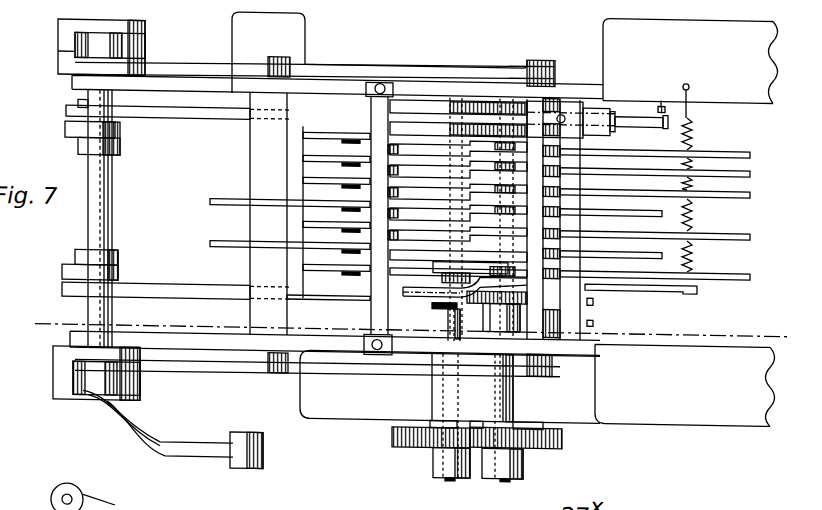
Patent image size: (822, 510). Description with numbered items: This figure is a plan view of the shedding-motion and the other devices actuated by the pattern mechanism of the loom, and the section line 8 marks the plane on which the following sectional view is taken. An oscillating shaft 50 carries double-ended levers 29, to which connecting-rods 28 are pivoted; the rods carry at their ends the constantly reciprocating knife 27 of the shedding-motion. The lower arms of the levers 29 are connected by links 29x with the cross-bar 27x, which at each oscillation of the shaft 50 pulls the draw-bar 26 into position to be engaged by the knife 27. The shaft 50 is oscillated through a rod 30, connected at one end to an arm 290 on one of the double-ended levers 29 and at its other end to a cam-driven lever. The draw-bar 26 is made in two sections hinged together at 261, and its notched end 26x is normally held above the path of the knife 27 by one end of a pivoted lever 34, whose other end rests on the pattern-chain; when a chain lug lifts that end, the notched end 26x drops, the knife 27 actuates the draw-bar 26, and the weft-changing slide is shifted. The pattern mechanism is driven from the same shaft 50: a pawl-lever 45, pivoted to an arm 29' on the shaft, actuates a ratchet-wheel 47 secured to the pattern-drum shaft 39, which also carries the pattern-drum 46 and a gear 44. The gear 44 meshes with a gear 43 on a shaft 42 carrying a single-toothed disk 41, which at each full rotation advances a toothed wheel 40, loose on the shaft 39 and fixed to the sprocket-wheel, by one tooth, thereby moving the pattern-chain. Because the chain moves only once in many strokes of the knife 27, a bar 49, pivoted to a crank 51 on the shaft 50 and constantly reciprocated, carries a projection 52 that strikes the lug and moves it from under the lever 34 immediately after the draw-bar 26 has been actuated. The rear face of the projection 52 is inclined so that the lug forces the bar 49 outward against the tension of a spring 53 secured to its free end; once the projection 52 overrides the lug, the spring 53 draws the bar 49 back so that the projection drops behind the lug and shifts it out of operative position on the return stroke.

The section line 8 is at (405, 332).
The draw-bar 26 is at (740, 276).
The notched end of the draw-bar 26x is at (342, 500).
The knife 27 is at (250, 273).
The cross-bar 27x is at (540, 107).
The connecting-rods 28 is at (192, 68).
The double-ended levers 29 is at (78, 206).
The links 29x is at (362, 378).
The arm 29' is at (69, 135).
The rod 30 is at (266, 463).
The pivoted lever 34 is at (356, 277).
The pattern-drum shaft 39 is at (513, 394).
The toothed wheel 40 is at (555, 296).
The disk 41 is at (413, 293).
The shaft 42 is at (452, 480).
The gear 43 is at (410, 448).
The gear 44 is at (557, 446).
The pawl-lever 45 is at (177, 124).
The pattern-drum 46 is at (570, 174).
The ratchet-wheel 47 is at (450, 133).
The bar 49 is at (207, 302).
The shaft 50 is at (90, 231).
The crank 51 is at (62, 280).
The projection 52 is at (478, 295).
The spring 53 is at (695, 207).
The hinge 261 is at (512, 479).
The arm 290 is at (200, 462).